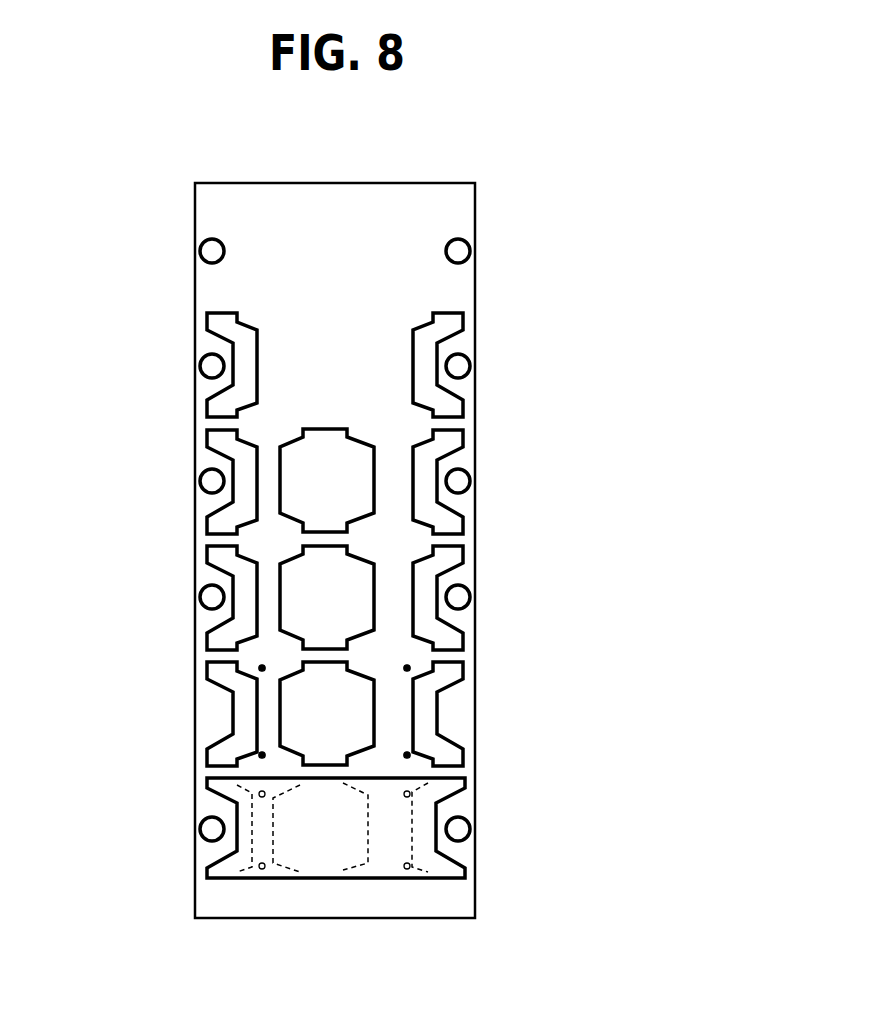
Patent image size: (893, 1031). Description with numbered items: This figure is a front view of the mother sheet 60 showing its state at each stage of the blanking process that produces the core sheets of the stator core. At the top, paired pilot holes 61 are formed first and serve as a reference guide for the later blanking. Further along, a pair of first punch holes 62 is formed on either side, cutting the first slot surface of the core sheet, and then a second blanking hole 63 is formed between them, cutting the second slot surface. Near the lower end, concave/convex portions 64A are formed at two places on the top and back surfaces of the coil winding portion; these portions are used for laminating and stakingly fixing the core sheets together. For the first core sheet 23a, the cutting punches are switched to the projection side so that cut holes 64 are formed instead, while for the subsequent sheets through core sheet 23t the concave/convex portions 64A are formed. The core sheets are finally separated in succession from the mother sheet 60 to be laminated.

The mother sheet 60 is at (656, 479).
The pilot holes 61 is at (204, 243).
The first punch holes 62 is at (207, 320).
The second blanking hole 63 is at (357, 485).
The cut holes 64 is at (259, 797).
The concave/convex portions 64A is at (262, 668).
The core sheet 23a is at (252, 841).
The core sheet 23t is at (416, 866).